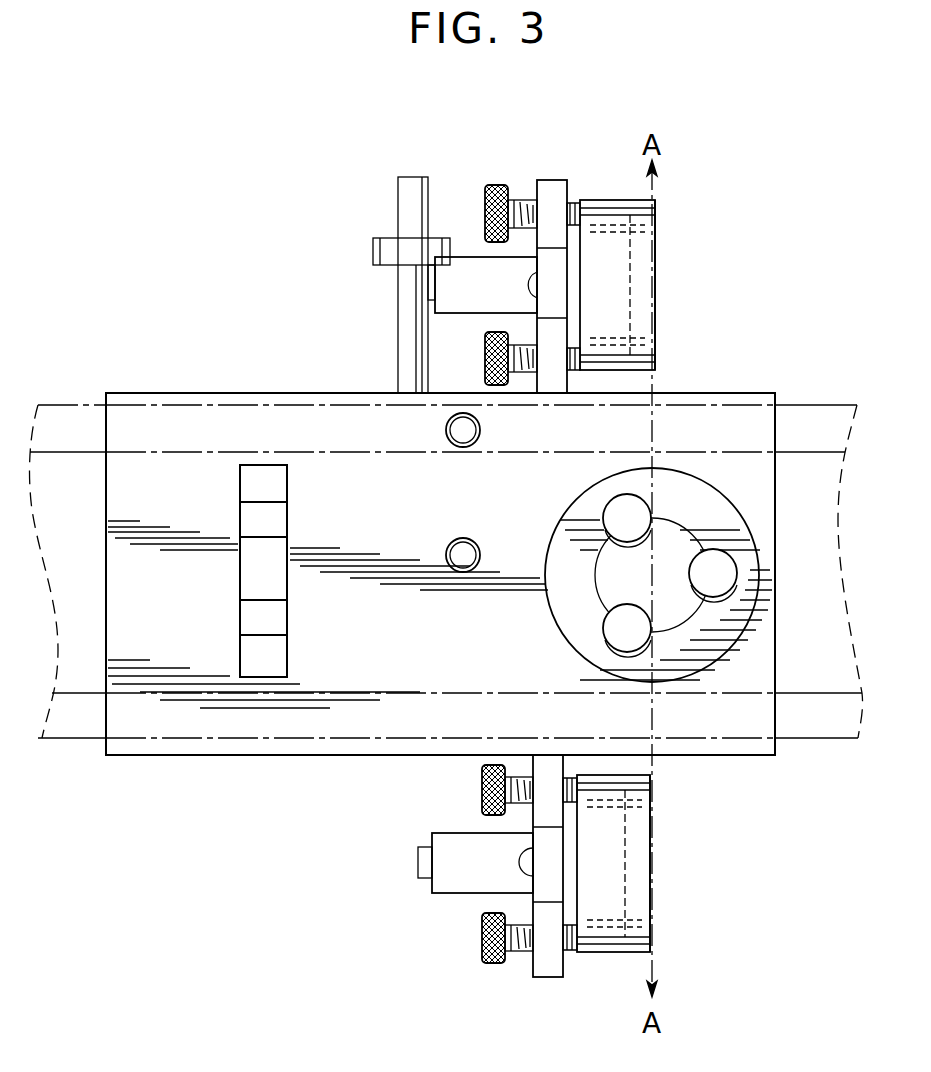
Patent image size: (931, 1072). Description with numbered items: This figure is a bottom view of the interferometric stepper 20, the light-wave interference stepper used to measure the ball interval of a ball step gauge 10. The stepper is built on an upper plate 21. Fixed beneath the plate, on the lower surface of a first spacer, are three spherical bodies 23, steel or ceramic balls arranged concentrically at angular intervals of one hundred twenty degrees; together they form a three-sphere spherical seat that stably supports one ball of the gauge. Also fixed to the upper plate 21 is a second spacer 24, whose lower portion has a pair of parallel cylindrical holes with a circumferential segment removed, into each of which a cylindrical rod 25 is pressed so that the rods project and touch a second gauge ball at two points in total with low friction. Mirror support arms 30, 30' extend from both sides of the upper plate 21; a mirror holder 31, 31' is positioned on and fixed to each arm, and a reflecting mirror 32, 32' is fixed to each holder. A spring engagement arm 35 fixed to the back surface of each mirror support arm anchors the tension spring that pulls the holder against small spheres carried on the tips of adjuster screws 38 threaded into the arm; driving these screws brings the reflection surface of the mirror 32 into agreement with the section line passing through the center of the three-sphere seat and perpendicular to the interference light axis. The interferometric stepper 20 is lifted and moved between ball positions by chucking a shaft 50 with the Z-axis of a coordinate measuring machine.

The ball step gauge 10 is at (803, 475).
The interferometric stepper 20 is at (738, 302).
The upper plate 21 is at (345, 478).
The spherical bodies 23 is at (602, 515).
The second spacer 24 is at (243, 661).
The cylindrical rods 25 is at (250, 520).
The mirror support arm 30 is at (558, 252).
The mirror support arm 30' is at (551, 901).
The mirror holder 31 is at (611, 240).
The mirror holder 31' is at (606, 911).
The reflecting mirror 32 is at (692, 285).
The reflecting mirror 32' is at (694, 863).
The spring engagement arm 35 is at (450, 290).
The adjuster screws 38 is at (522, 195).
The shaft 50 is at (462, 542).